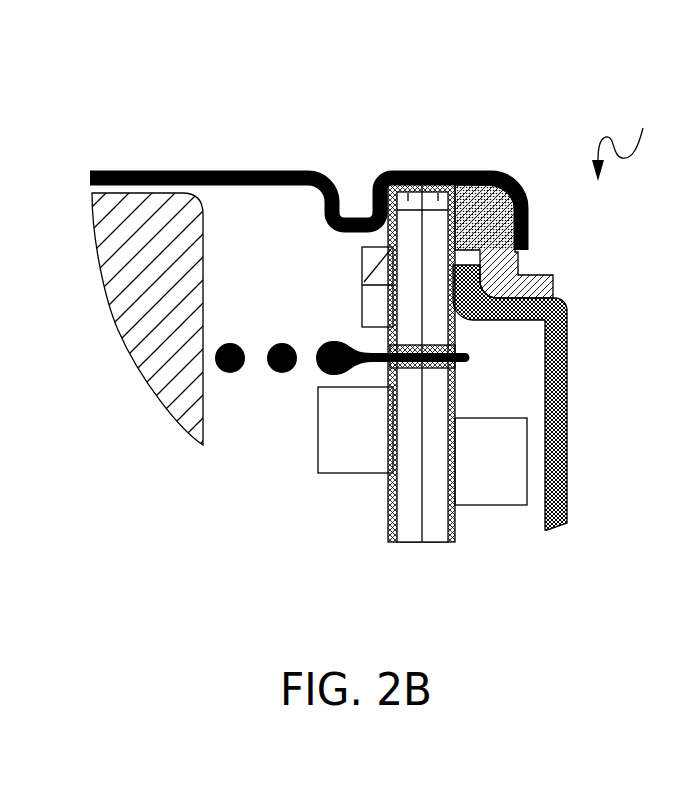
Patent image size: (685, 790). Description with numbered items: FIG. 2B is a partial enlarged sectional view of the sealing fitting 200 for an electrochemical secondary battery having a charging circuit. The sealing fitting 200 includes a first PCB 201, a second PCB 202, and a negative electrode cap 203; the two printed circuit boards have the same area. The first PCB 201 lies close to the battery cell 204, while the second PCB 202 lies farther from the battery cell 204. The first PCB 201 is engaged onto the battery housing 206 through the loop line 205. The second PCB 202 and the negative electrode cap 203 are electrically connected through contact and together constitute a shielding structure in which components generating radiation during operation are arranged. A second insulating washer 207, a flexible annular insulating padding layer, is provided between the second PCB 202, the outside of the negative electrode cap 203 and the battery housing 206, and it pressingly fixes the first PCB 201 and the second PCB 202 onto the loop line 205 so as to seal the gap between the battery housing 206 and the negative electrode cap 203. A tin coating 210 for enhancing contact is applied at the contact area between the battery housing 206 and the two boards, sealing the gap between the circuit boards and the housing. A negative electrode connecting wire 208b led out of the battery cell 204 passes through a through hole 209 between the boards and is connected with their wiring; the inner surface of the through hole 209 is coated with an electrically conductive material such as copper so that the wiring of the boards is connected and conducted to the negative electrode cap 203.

The sealing fitting 200 is at (637, 147).
The first PCB 201 is at (407, 175).
The second PCB 202 is at (441, 170).
The negative electrode cap 203 is at (553, 378).
The battery cell 204 is at (183, 350).
The loop line 205 is at (353, 222).
The battery housing 206 is at (144, 170).
The second insulating washer 207 is at (483, 225).
The negative electrode connecting wire 208b is at (333, 375).
The through hole 209 is at (437, 367).
The tin coating 210 is at (423, 170).